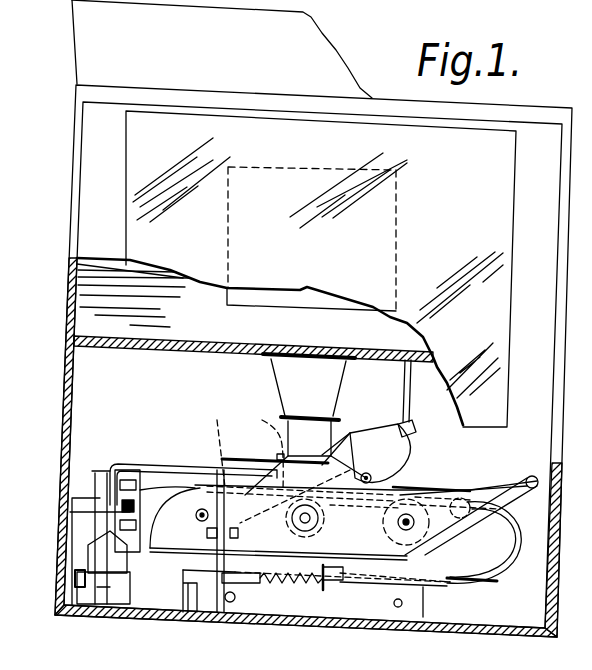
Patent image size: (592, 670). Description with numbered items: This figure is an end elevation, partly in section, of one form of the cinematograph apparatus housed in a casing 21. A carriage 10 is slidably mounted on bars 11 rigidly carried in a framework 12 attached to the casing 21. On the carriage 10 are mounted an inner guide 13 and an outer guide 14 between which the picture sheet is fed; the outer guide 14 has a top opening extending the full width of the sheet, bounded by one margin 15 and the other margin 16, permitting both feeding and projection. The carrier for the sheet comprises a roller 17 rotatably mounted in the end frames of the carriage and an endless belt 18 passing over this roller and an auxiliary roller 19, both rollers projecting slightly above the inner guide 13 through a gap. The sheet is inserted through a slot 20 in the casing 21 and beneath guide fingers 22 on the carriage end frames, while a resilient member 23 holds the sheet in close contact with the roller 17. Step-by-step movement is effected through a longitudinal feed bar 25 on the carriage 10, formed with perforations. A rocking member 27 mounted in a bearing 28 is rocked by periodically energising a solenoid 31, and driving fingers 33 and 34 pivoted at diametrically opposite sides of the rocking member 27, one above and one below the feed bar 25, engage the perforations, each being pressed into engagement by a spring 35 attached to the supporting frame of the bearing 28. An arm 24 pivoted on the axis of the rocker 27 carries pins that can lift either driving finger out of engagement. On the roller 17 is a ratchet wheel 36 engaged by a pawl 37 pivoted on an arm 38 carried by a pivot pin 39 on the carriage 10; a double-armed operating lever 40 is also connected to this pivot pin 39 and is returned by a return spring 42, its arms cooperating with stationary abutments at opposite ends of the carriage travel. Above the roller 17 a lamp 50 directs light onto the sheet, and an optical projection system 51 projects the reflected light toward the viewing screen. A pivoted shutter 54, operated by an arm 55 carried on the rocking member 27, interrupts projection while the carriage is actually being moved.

The carriage 10 is at (372, 576).
The bars 11 is at (412, 482).
The framework 12 is at (556, 388).
The inner guide 13 is at (495, 548).
The outer guide 14 is at (450, 587).
The margin of opening 15 is at (450, 507).
The margin of opening 16 is at (263, 442).
The roller 17 is at (292, 524).
The endless belt 18 is at (372, 558).
The auxiliary roller 19 is at (447, 540).
The slot 20 is at (530, 477).
The casing 21 is at (546, 579).
The guide fingers 22 is at (427, 497).
The resilient member 23 is at (350, 485).
The arm 24 is at (70, 512).
The longitudinal feed bar 25 is at (146, 520).
The rocking member 27 is at (120, 472).
The bearing 28 is at (90, 488).
The solenoid 31 is at (100, 606).
The driving finger 33 is at (133, 480).
The driving finger 34 is at (185, 548).
The spring 35 is at (128, 468).
The ratchet wheel 36 is at (365, 517).
The pawl 37 is at (213, 440).
The arm 38 is at (172, 591).
The pivot pin 39 is at (221, 612).
The double-armed operating lever 40 is at (255, 583).
The return spring 42 is at (320, 580).
The lamp 50 is at (367, 425).
The optical projection system 51 is at (277, 387).
The pivoted shutter 54 is at (237, 459).
The arm 55 is at (192, 465).